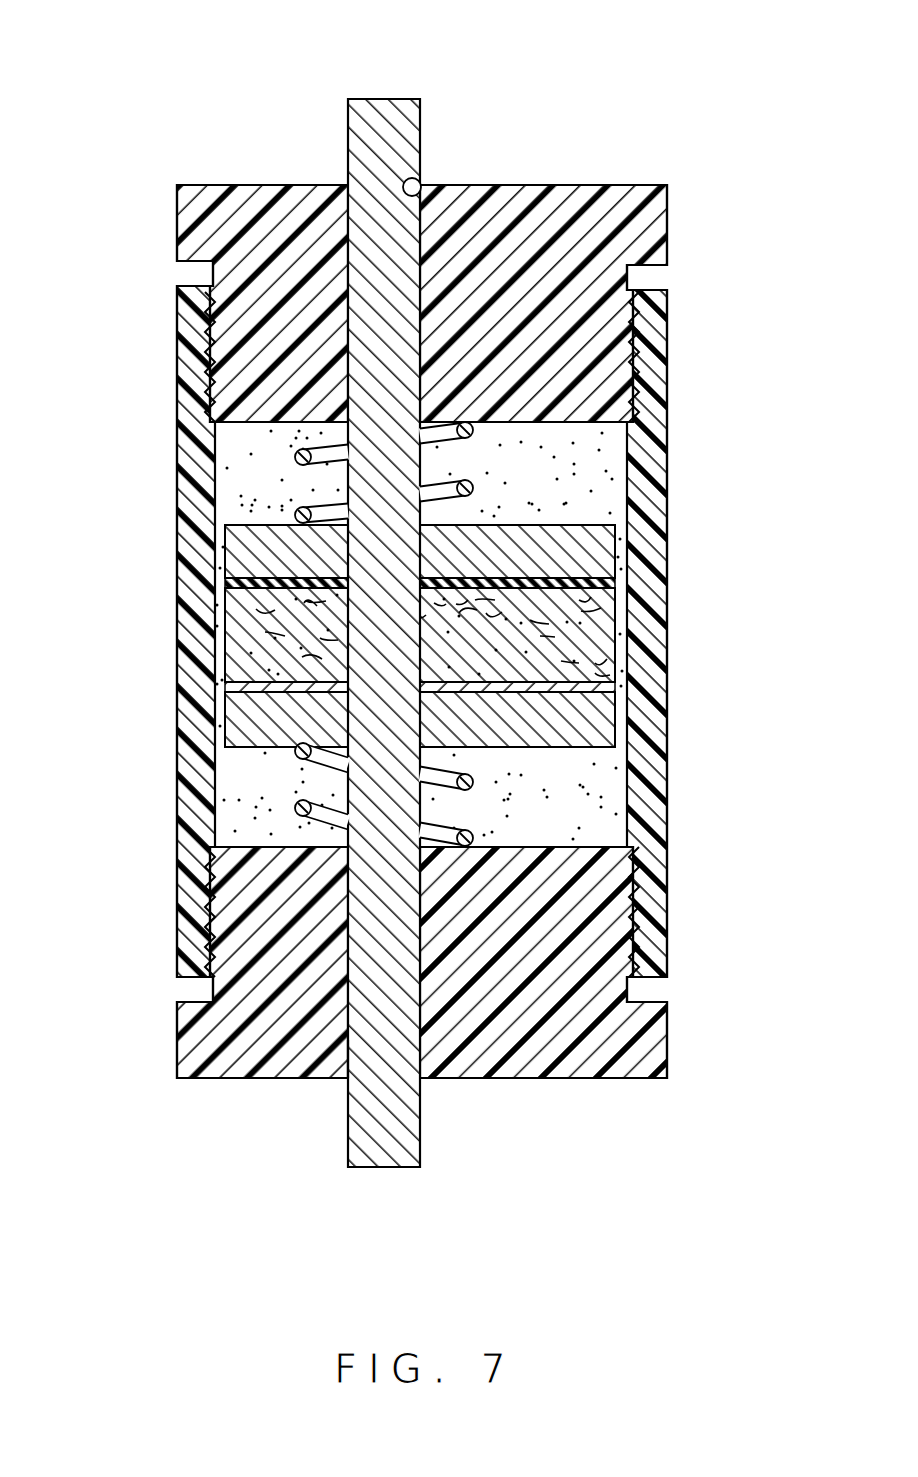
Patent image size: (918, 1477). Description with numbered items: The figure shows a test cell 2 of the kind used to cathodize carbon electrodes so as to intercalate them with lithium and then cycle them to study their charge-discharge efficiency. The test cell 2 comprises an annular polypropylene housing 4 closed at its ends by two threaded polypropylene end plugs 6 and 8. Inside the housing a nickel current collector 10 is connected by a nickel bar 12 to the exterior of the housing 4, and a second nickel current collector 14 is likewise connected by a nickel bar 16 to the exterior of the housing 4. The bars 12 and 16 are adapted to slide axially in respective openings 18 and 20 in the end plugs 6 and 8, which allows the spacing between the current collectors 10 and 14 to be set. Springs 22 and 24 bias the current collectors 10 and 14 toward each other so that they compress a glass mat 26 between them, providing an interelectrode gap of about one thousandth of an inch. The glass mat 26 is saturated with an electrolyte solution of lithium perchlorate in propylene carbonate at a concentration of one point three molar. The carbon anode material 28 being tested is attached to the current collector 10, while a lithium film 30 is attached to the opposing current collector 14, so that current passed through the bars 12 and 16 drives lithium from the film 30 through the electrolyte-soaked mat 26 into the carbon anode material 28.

The test cell 2 is at (158, 143).
The annular polypropylene housing 4 is at (645, 811).
The threaded polypropylene end plug 6 is at (560, 197).
The threaded polypropylene end plug 8 is at (528, 1045).
The nickel current collector 10 is at (580, 553).
The nickel bar 12 is at (383, 120).
The nickel current collector 14 is at (580, 724).
The nickel bar 16 is at (388, 1125).
The opening 18 is at (420, 180).
The opening 20 is at (347, 1050).
The spring 22 is at (297, 455).
The spring 24 is at (296, 805).
The glass mat 26 is at (262, 621).
The carbon anode material 28 is at (240, 581).
The lithium film 30 is at (240, 687).